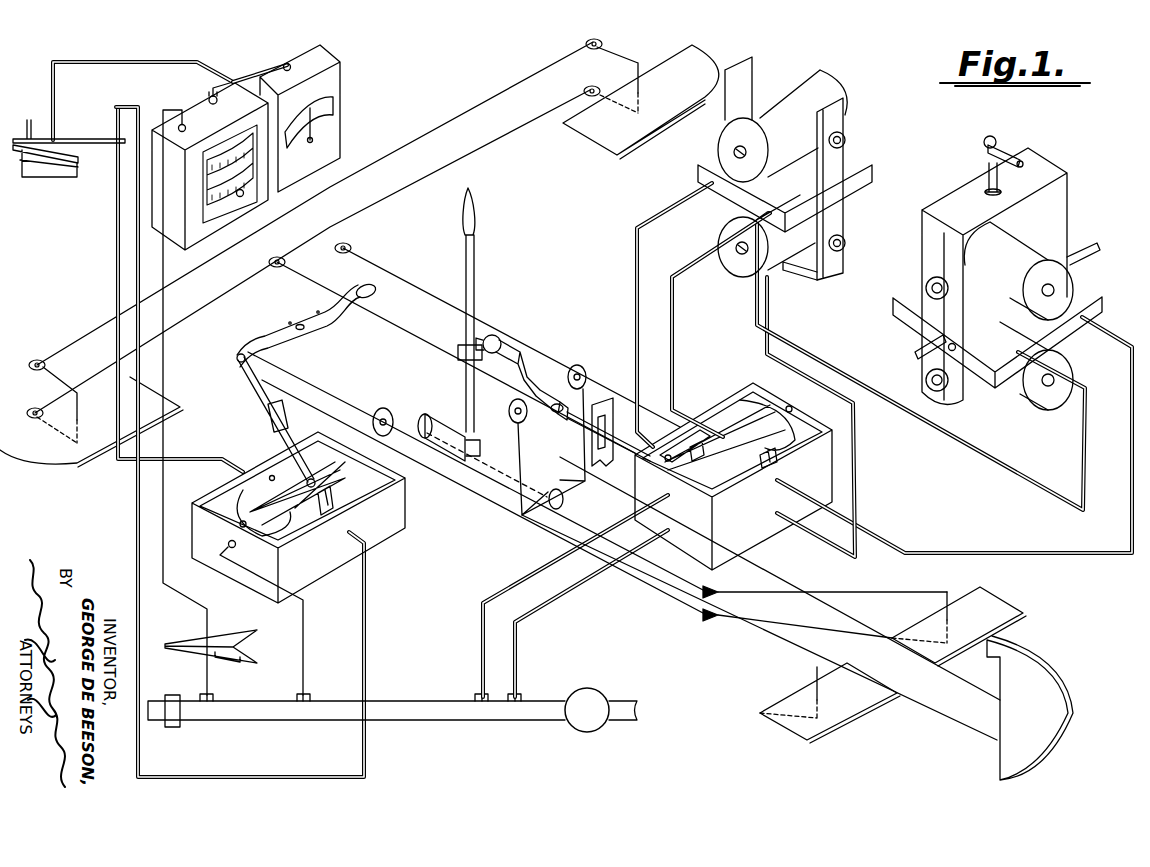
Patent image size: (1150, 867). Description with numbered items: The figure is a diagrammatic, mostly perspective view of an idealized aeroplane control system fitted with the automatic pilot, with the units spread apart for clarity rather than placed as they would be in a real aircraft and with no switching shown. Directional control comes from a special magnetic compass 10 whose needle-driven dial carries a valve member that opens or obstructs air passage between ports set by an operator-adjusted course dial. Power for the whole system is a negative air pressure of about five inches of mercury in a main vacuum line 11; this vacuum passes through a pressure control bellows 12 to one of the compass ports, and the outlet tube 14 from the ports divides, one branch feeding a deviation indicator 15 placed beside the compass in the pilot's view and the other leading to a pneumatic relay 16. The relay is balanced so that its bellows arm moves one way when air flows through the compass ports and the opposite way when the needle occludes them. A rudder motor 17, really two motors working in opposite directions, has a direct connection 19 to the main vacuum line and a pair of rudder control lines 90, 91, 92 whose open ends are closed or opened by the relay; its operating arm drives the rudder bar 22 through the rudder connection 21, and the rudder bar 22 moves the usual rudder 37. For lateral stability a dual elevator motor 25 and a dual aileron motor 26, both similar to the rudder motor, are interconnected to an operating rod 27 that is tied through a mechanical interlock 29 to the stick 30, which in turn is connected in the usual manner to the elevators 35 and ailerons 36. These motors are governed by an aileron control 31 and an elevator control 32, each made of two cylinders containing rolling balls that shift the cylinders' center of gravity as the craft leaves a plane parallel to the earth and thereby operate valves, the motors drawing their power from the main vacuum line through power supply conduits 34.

The magnetic compass 10 is at (195, 233).
The main vacuum line 11 is at (465, 712).
The pressure control bellows 12 is at (216, 640).
The outlet tube 14 is at (212, 99).
The deviation indicator 15 is at (333, 75).
The pneumatic relay 16 is at (72, 158).
The rudder motor 17 is at (380, 537).
The direct connection 19 is at (304, 652).
The rudder connection 21 is at (266, 395).
The rudder bar 22 is at (265, 349).
The dual elevator motor 25 is at (830, 460).
The dual aileron motor 26 is at (767, 537).
The operating rod 27 is at (528, 377).
The mechanical interlock 29 is at (499, 343).
The stick 30 is at (474, 288).
The aileron control 31 is at (838, 90).
The elevator control 32 is at (1052, 170).
The power supply conduits 34 is at (502, 590).
The elevators 35 is at (1010, 613).
The ailerons 36 is at (66, 462).
The rudder 37 is at (1052, 704).
The rudder control line 90 is at (103, 137).
The rudder control line 91 is at (124, 107).
The rudder control line 92 is at (113, 175).